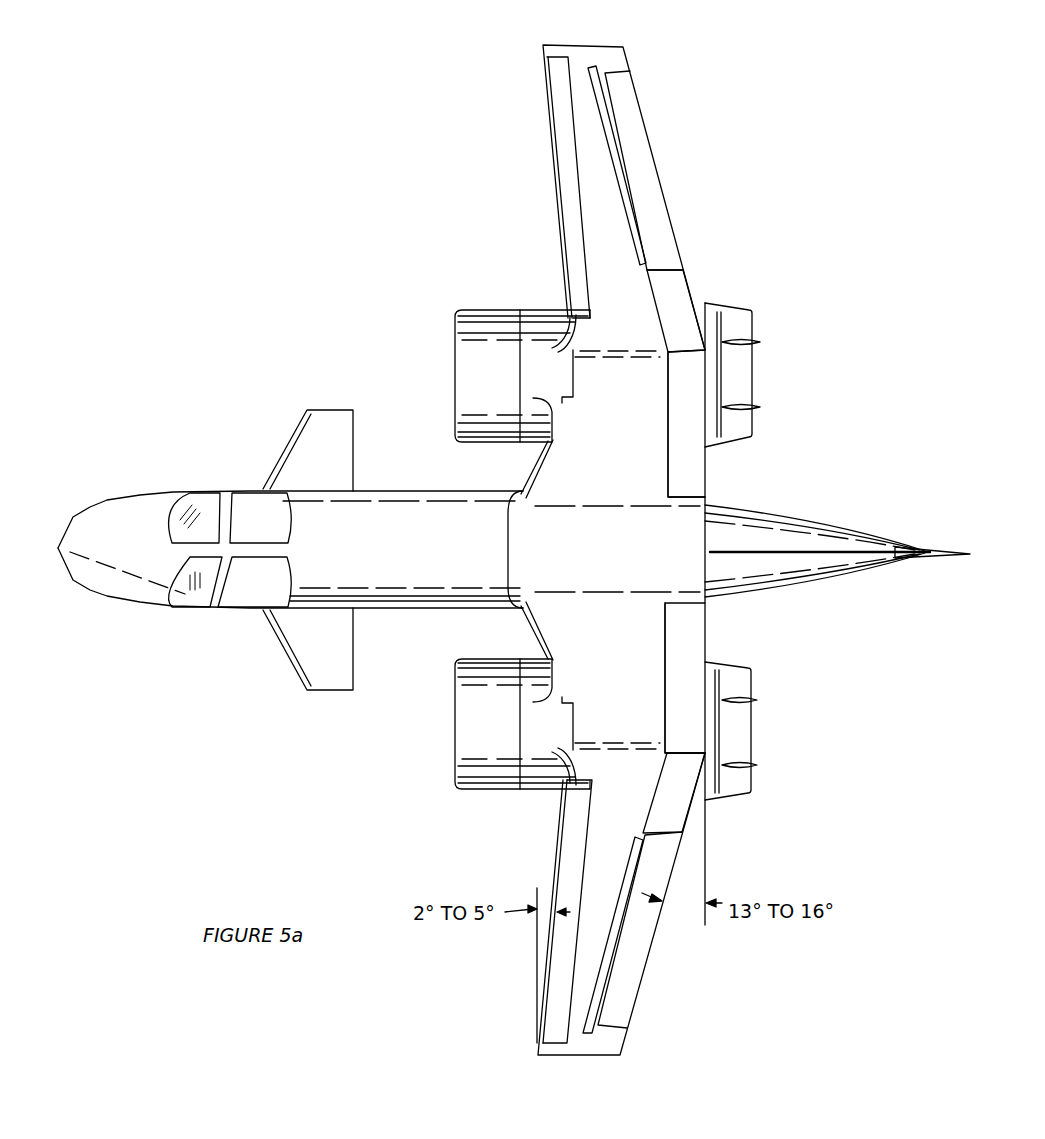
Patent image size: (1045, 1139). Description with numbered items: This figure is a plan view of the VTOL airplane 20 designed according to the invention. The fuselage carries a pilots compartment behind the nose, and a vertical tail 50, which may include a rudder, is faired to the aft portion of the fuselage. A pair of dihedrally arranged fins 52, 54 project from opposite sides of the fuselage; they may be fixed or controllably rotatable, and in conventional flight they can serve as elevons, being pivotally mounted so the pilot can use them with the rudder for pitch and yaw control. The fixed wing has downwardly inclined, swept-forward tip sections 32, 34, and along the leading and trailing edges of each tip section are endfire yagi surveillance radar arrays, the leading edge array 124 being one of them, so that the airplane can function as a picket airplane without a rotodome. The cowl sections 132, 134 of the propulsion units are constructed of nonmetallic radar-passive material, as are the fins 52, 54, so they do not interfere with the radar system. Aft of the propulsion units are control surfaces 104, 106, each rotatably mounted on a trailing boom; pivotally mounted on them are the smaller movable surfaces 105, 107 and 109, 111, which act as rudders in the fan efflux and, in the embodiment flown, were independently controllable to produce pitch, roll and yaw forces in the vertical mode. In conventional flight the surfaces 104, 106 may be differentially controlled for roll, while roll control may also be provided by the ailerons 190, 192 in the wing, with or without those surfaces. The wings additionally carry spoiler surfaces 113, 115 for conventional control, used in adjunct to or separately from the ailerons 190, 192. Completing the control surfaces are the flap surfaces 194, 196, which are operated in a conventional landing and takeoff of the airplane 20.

The VTOL airplane 20 is at (221, 460).
The wing tip section 32 is at (650, 851).
The wing tip section 34 is at (629, 250).
The vertical tail 50 is at (870, 552).
The fin 52 is at (340, 692).
The fin 54 is at (333, 410).
The control surface 104 is at (743, 736).
The movable control surface 105 is at (757, 340).
The control surface 106 is at (743, 376).
The movable control surface 107 is at (757, 407).
The movable control surface 109 is at (757, 700).
The movable control surface 111 is at (757, 765).
The spoiler surface 113 is at (612, 938).
The spoiler surface 115 is at (622, 195).
The leading edge endfire yagi surveillance radar array 124 is at (553, 137).
The cowl section 132 is at (507, 790).
The cowl section 134 is at (512, 310).
The aileron 190 is at (678, 812).
The aileron 192 is at (683, 297).
The flap surface 194 is at (695, 647).
The flap surface 196 is at (697, 481).